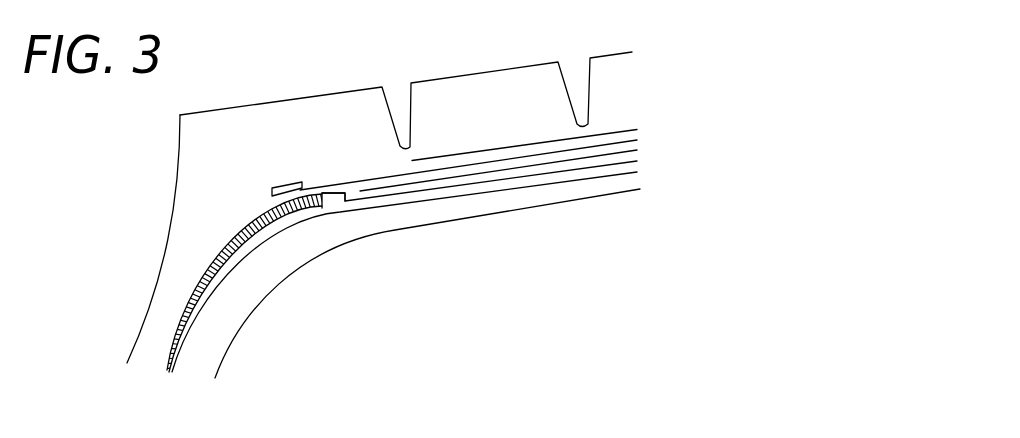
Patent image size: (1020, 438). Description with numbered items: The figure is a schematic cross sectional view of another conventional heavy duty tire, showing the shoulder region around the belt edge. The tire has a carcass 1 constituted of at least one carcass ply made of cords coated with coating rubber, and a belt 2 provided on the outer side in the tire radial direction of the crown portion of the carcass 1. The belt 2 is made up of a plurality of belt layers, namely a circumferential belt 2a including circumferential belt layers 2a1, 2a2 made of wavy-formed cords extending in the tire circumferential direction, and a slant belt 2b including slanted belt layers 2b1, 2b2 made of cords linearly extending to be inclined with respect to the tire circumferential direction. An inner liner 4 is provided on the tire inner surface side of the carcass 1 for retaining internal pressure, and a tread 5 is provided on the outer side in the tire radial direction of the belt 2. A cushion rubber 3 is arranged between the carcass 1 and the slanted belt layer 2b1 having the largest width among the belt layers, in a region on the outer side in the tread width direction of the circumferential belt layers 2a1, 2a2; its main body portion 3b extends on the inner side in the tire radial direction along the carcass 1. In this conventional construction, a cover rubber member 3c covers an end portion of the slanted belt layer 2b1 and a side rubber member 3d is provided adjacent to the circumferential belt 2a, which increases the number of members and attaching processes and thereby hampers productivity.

The carcass 1 is at (452, 198).
The belt 2 is at (554, 138).
The circumferential belt 2a is at (548, 179).
The circumferential belt layer 2a1 is at (637, 172).
The circumferential belt layer 2a2 is at (637, 150).
The slant belt 2b is at (537, 126).
The slanted belt layer 2b1 is at (637, 140).
The slanted belt layer 2b2 is at (637, 130).
The cushion rubber 3 is at (256, 199).
The main body portion 3b is at (237, 248).
The cover rubber member 3c is at (287, 185).
The side rubber member 3d is at (335, 204).
The inner liner 4 is at (550, 205).
The tread 5 is at (448, 76).